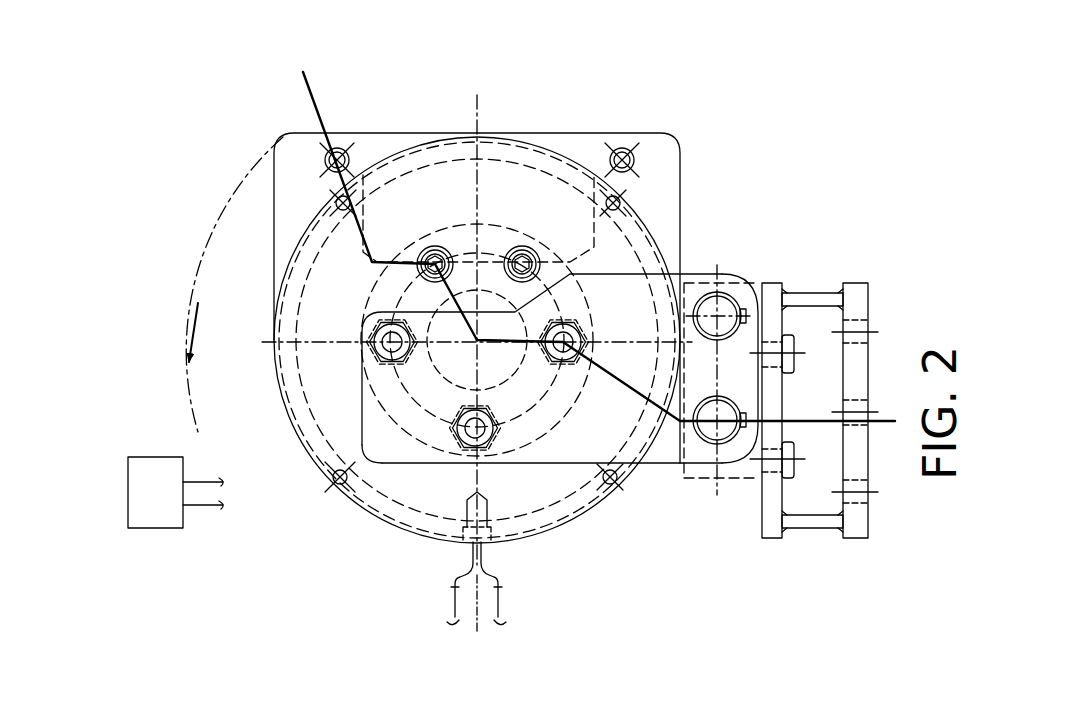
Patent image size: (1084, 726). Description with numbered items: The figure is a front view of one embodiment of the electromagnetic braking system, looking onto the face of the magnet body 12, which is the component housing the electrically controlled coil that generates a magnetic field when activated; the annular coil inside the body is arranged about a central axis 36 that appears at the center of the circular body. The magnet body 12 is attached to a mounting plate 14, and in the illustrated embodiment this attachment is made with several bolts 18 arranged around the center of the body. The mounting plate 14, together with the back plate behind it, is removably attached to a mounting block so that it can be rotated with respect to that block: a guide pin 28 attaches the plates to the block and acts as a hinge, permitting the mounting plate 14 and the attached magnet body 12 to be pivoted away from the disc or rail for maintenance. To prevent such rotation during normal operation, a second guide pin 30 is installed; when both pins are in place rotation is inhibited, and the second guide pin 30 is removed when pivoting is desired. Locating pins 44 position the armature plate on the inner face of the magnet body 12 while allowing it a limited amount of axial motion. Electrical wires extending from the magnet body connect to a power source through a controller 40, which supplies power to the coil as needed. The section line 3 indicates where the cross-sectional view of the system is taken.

The section line 3— 3 is at (303, 72).
The magnet body 12 is at (415, 488).
The mounting plate 14 is at (663, 448).
The bolts 18 is at (388, 352).
The guide pin 28 is at (723, 432).
The second guide pin 30 is at (706, 305).
The central axis 36 is at (477, 340).
The controller 40 is at (137, 492).
The locating pins 44 is at (332, 474).